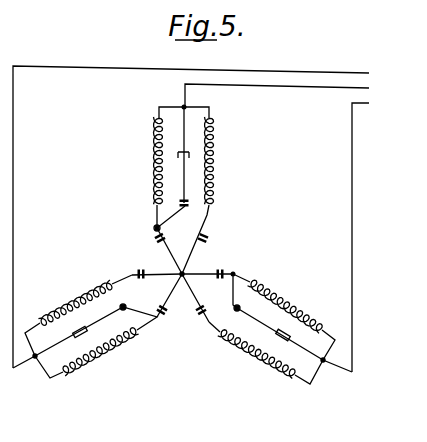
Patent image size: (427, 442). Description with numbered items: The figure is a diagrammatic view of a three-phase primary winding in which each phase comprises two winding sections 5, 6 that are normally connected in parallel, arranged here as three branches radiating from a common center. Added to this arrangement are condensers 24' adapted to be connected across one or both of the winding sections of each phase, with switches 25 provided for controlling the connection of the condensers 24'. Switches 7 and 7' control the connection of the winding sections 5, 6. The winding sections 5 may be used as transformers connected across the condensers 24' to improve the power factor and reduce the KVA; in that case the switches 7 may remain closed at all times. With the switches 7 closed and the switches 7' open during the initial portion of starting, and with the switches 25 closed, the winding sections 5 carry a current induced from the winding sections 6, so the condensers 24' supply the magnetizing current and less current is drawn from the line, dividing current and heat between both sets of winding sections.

The winding section 5 is at (149, 160).
The winding section 6 is at (215, 167).
The switch 7 is at (180, 267).
The switch 7' is at (188, 291).
The condenser 24' is at (177, 261).
The switch 25 is at (166, 238).